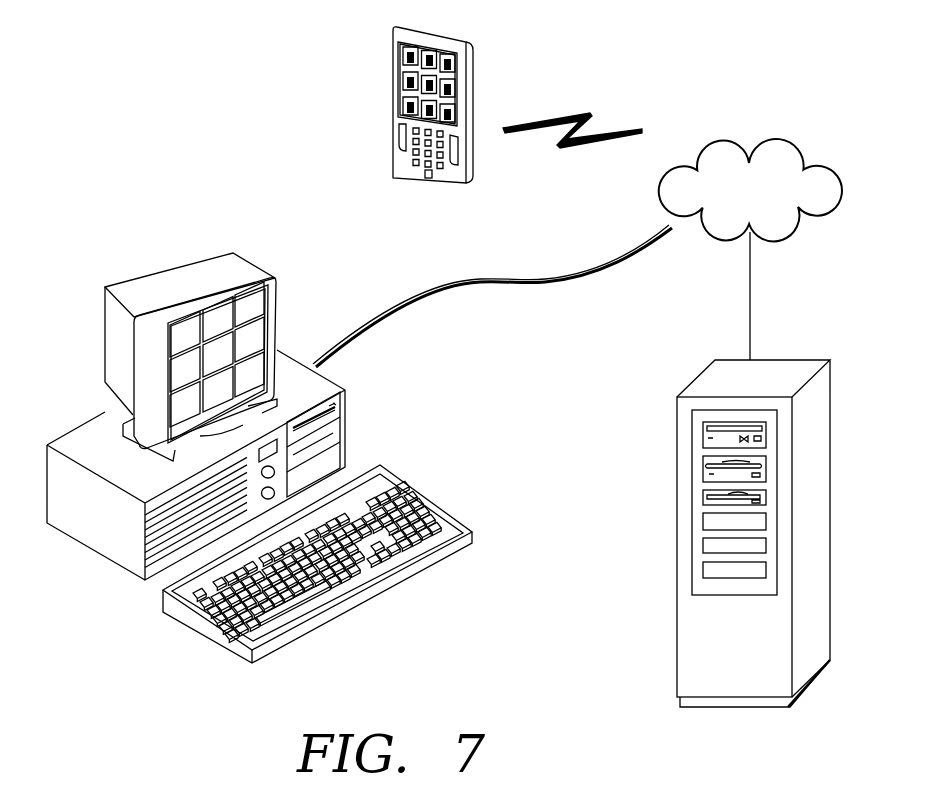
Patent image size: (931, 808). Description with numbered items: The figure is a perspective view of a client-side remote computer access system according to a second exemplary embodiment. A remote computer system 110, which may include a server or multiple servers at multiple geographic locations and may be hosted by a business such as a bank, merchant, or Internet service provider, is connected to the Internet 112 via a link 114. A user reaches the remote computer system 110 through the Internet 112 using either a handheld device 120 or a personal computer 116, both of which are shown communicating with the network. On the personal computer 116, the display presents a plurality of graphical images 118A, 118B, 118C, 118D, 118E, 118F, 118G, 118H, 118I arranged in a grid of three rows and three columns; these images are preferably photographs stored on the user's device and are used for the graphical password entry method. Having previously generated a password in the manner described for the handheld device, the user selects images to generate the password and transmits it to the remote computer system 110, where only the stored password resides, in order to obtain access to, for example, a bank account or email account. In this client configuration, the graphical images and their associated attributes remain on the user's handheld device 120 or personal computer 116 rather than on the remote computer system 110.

The remote computer system 110 is at (687, 527).
The Internet 112 is at (760, 143).
The link 114 is at (750, 305).
The personal computer 116 is at (259, 458).
The graphical image 118A is at (183, 335).
The graphical image 118B is at (216, 320).
The graphical image 118C is at (248, 304).
The graphical image 118D is at (183, 370).
The graphical image 118E is at (216, 355).
The graphical image 118F is at (248, 339).
The graphical image 118G is at (183, 405).
The graphical image 118H is at (216, 390).
The graphical image 118I is at (248, 374).
The handheld device 120 is at (392, 88).